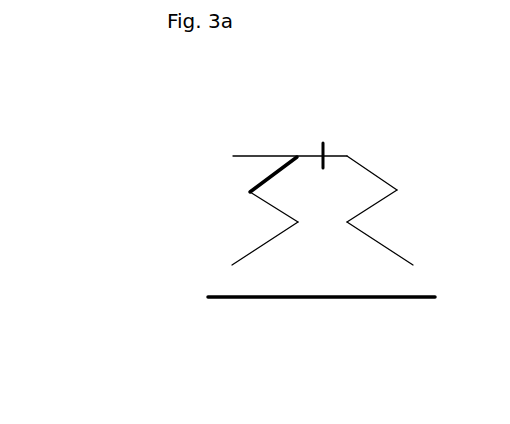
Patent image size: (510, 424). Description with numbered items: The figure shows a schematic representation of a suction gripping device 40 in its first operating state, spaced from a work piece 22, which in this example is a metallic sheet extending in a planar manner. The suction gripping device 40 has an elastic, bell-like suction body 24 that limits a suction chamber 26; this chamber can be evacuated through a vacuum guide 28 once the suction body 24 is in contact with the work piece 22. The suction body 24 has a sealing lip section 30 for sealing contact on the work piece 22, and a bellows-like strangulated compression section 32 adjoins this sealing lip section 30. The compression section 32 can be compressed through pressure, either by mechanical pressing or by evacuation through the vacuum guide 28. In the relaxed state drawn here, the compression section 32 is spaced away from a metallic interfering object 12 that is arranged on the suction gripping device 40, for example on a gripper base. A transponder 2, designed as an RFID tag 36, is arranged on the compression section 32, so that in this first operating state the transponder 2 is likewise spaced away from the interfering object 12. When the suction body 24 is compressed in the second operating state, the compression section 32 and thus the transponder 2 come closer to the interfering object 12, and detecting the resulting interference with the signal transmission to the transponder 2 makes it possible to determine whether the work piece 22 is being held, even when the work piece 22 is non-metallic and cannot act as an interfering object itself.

The suction gripping device 40 is at (130, 132).
The interfering object 12 is at (255, 156).
The vacuum guide 28 is at (326, 146).
The suction body 24 is at (375, 173).
The compression section 32 is at (397, 187).
The suction chamber 26 is at (323, 218).
The transponder 2 is at (212, 189).
The RFID tag 36 is at (270, 177).
The sealing lip section 30 is at (260, 247).
The work piece 22 is at (388, 298).